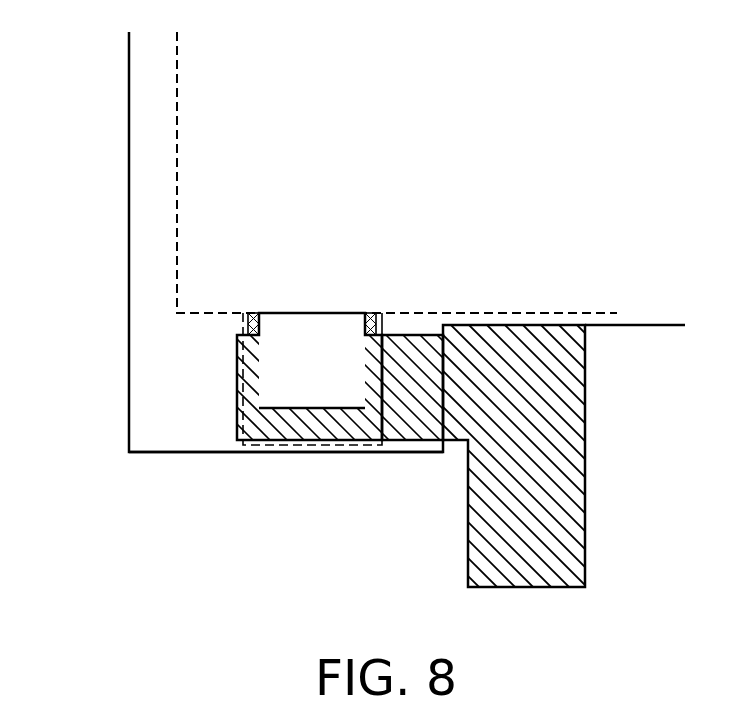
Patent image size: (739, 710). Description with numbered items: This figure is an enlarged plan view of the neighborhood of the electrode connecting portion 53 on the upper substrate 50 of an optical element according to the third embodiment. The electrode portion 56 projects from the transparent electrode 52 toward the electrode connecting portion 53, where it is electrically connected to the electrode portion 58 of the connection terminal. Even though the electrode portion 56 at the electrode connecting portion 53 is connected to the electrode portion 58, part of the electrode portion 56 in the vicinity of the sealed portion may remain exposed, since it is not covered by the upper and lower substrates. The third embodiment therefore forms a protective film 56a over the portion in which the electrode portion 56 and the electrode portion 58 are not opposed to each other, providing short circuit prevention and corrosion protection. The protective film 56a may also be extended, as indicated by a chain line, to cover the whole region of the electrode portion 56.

The upper substrate 50 is at (128, 162).
The transparent electrode 52 is at (177, 128).
The electrode connecting portion 53 is at (150, 453).
The electrode portion 56 is at (317, 322).
The protective film 56a is at (383, 330).
The electrode portion of the connection terminal 58 is at (272, 423).